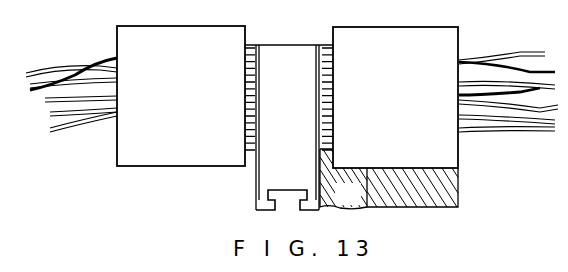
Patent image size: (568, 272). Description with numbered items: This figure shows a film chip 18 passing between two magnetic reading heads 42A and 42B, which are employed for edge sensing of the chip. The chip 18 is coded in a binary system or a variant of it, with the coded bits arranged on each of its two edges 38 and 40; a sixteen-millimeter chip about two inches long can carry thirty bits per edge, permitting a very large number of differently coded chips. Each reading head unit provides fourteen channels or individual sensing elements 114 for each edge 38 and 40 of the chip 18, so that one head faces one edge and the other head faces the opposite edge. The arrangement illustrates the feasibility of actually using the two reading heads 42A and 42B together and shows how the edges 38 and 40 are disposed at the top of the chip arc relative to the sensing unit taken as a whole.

The film chip 18 is at (283, 63).
The edge of the chip 38 is at (258, 186).
The edge of the chip 40 is at (322, 182).
The reading head 42A is at (197, 150).
The reading head 42B is at (416, 150).
The sensing elements 114 is at (245, 88).